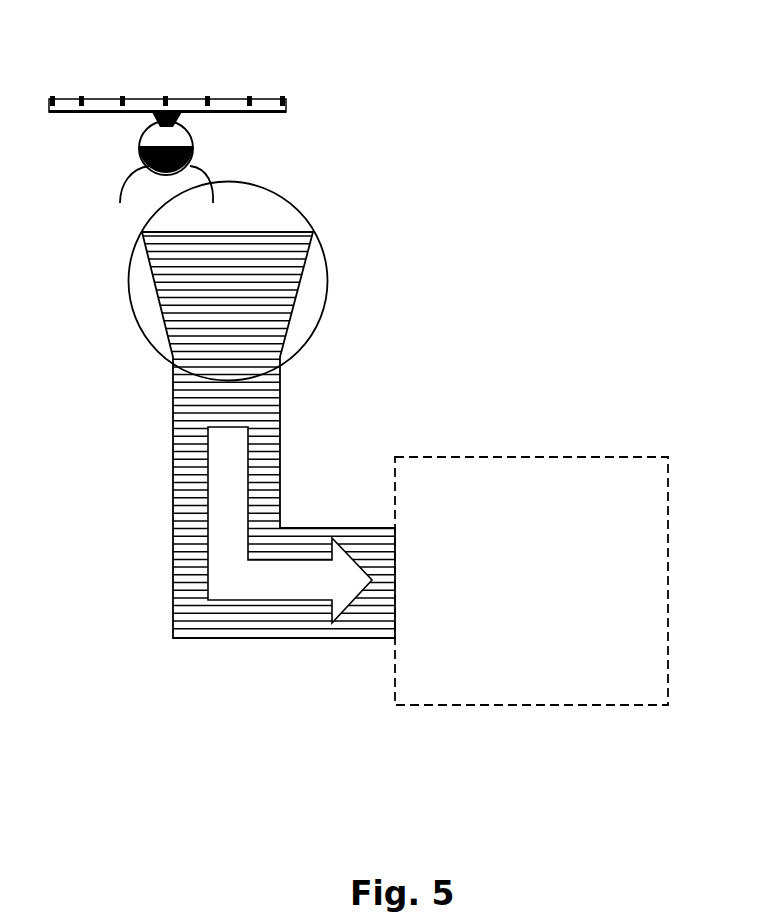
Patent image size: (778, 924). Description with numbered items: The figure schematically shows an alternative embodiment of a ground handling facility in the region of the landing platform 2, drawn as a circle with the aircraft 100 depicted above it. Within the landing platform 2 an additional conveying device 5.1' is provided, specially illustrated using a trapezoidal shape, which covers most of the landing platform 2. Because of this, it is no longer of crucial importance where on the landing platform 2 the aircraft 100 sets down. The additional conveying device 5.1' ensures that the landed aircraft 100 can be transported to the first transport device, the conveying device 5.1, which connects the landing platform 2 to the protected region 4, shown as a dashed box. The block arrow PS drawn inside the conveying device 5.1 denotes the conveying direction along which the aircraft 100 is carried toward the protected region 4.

The aircraft 100 is at (168, 98).
The additional conveying device 5.1' is at (285, 247).
The conveying device 5.1 is at (271, 564).
The block arrow denoting the conveying direction PS is at (265, 582).
The landing platform 2 is at (327, 295).
The protected region 4 is at (568, 457).